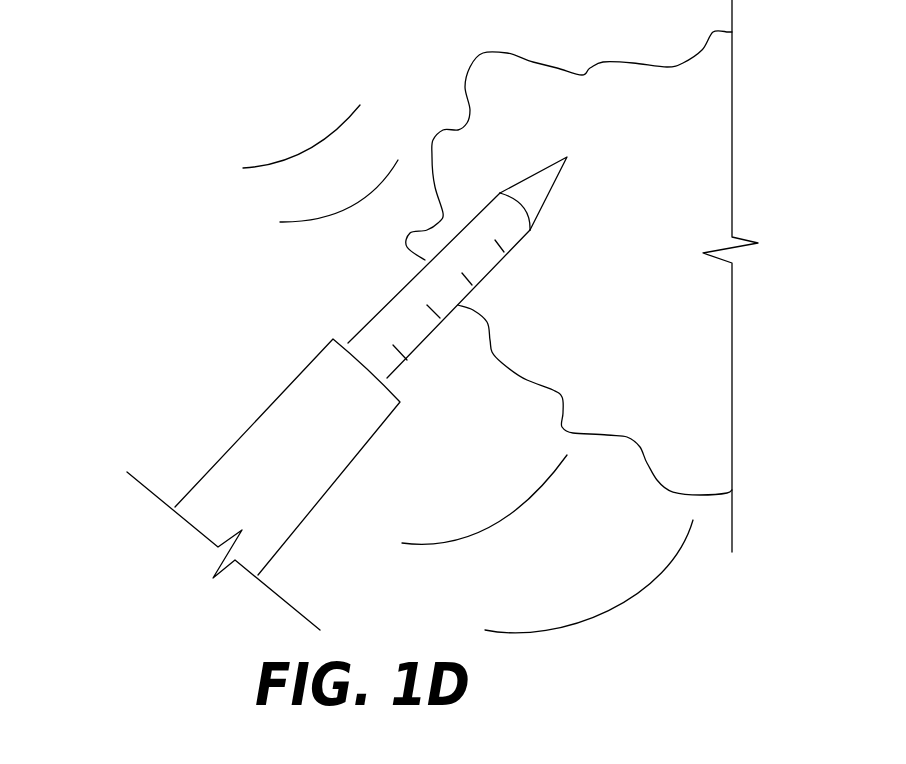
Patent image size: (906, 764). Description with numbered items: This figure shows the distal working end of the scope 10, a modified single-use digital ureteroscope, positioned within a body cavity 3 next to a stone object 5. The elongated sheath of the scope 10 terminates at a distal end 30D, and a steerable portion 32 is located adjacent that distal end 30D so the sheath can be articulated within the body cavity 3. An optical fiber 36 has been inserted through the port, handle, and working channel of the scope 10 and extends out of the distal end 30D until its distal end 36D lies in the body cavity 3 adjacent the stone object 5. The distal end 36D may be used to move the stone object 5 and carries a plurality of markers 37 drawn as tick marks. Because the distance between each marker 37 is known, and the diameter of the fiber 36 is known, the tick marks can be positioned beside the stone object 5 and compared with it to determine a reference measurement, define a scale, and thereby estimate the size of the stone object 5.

The body cavity 3 is at (562, 549).
The stone object 5 is at (700, 125).
The scope 10 is at (190, 168).
The distal end of sheath 30D is at (317, 347).
The steerable portion 32 is at (265, 445).
The optical fiber 36 is at (487, 216).
The distal end of fiber 36D is at (547, 180).
The markers 37 is at (441, 320).